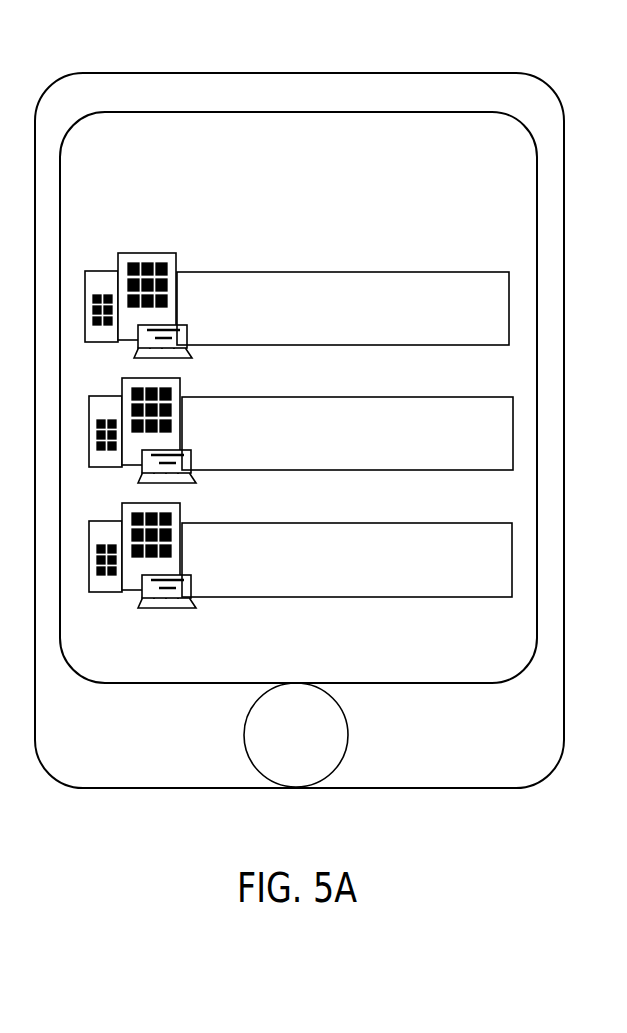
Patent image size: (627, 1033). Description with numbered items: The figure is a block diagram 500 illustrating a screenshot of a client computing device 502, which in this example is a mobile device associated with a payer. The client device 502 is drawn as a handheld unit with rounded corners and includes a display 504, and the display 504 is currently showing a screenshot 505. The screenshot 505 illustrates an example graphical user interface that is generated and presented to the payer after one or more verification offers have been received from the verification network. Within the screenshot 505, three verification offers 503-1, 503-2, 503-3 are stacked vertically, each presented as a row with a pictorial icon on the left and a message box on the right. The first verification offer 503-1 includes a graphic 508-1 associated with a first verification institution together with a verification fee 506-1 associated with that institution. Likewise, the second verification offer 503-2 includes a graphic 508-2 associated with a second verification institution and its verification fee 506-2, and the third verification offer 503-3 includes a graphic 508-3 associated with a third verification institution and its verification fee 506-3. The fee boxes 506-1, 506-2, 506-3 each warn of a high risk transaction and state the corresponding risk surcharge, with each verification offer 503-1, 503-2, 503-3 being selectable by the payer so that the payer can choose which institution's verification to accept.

The block diagram 500 is at (317, 34).
The client computing device 502 is at (563, 502).
The display 504 is at (537, 438).
The screenshot 505 is at (515, 193).
The verification offer 503-1 is at (324, 259).
The verification offer 503-2 is at (321, 391).
The verification offer 503-3 is at (321, 512).
The verification fee 506-1 is at (383, 272).
The verification fee 506-2 is at (400, 397).
The verification fee 506-3 is at (408, 523).
The graphic 508-1 is at (177, 266).
The graphic 508-2 is at (181, 391).
The graphic 508-3 is at (181, 516).